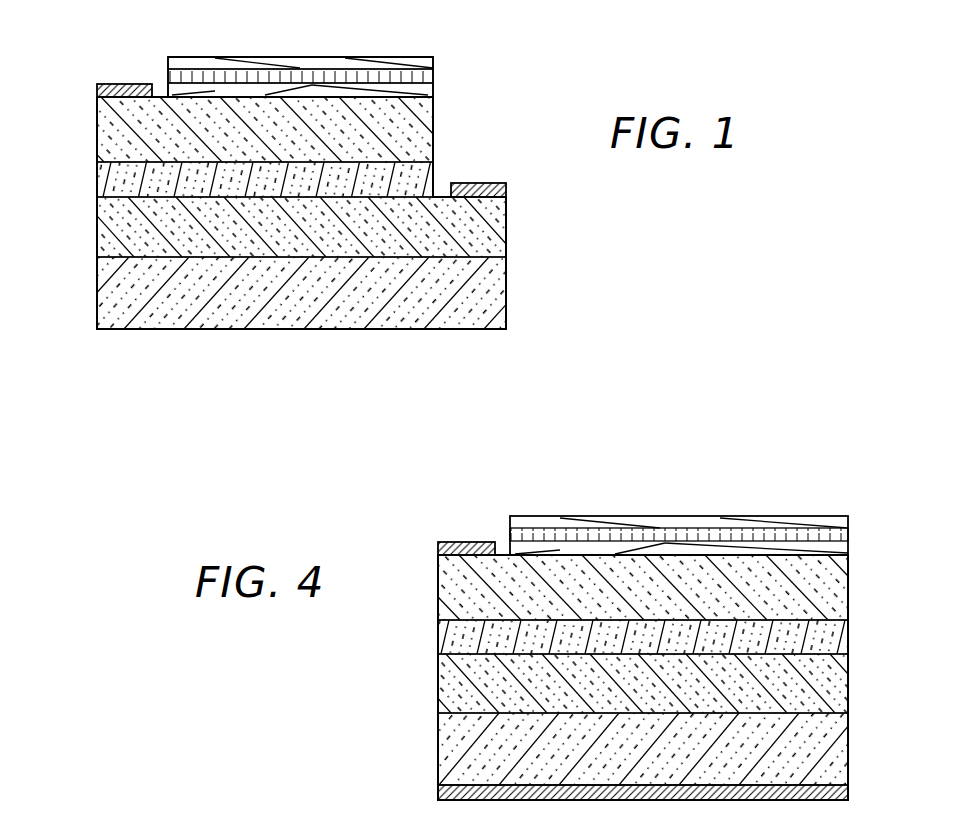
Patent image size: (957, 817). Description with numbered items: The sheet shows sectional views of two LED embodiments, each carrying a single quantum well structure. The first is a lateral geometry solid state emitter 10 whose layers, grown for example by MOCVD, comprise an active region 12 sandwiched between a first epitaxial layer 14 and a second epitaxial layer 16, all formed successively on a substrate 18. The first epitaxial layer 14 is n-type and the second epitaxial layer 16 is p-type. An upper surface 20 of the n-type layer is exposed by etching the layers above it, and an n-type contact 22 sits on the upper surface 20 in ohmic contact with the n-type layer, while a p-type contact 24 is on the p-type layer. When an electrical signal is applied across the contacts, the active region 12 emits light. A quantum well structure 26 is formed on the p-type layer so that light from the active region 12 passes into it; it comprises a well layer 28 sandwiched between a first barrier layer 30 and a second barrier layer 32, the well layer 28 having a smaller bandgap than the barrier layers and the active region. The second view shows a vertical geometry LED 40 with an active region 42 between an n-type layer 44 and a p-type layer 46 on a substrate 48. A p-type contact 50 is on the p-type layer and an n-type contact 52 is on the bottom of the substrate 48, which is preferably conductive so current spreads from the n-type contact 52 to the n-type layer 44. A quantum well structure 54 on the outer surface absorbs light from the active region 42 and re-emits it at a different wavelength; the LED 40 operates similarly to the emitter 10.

In FIG. 1, the solid state emitter 10 is at (562, 77).
In FIG. 1, the active region 12 is at (97, 182).
In FIG. 1, the first epitaxial layer 14 is at (97, 228).
In FIG. 1, the second epitaxial layer 16 is at (97, 133).
In FIG. 1, the substrate 18 is at (97, 295).
In FIG. 1, the upper surface 20 is at (489, 197).
In FIG. 1, the n-type contact 22 is at (490, 183).
In FIG. 1, the p-type contact 24 is at (124, 84).
In FIG. 1, the quantum well structure 26 is at (412, 52).
In FIG. 1, the well layer 28 is at (433, 78).
In FIG. 1, the first barrier layer 30 is at (433, 90).
In FIG. 1, the second barrier layer 32 is at (340, 57).
In FIG. 4, the LED 40 is at (388, 518).
In FIG. 4, the active region 42 is at (438, 640).
In FIG. 4, the n-type layer 44 is at (438, 685).
In FIG. 4, the p-type layer 46 is at (438, 590).
In FIG. 4, the substrate 48 is at (438, 756).
In FIG. 4, the p-type contact 50 is at (466, 542).
In FIG. 4, the n-type contact 52 is at (438, 794).
In FIG. 4, the quantum well structure 54 is at (789, 508).